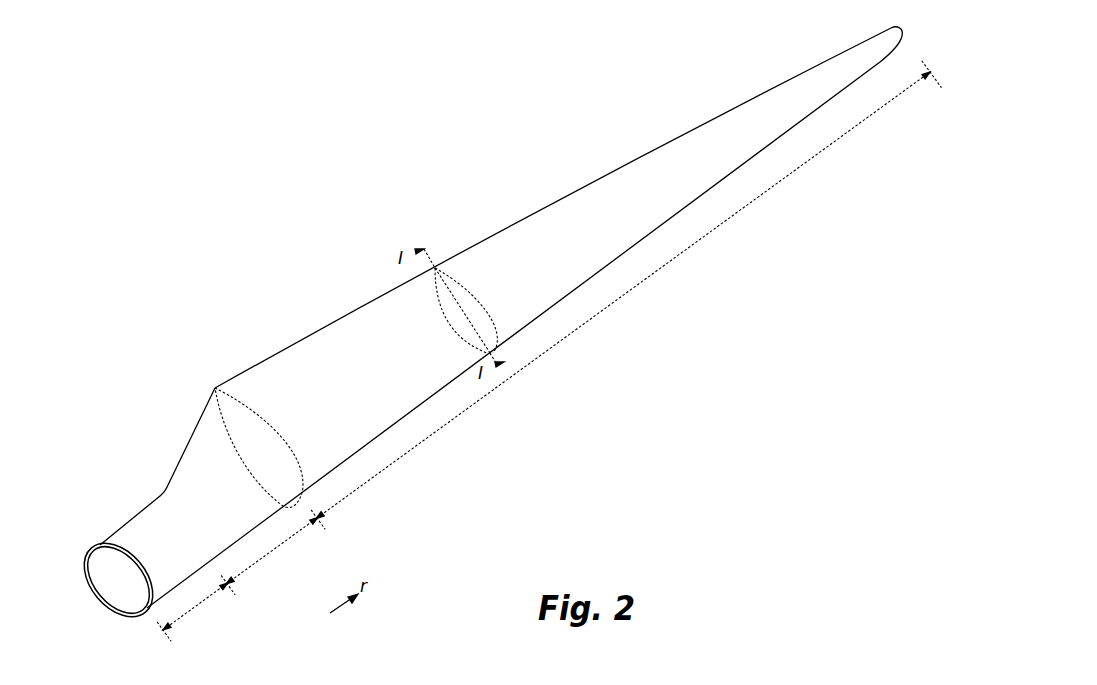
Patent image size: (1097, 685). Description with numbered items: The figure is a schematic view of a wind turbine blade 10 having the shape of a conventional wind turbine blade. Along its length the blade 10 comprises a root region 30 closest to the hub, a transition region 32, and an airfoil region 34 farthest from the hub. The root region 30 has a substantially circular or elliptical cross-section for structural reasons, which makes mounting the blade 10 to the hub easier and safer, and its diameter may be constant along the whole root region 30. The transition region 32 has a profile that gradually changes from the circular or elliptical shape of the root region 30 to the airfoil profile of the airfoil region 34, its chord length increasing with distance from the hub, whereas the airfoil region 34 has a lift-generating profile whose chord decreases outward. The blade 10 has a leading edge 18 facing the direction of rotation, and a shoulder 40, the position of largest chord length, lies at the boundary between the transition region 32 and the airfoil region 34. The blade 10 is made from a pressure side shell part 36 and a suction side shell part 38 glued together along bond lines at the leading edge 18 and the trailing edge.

The wind turbine blade 10 is at (486, 328).
The leading edge 18 is at (652, 235).
The root region 30 is at (203, 605).
The transition region 32 is at (277, 547).
The airfoil region 34 is at (563, 339).
The pressure side shell part 36 is at (118, 540).
The suction side shell part 38 is at (88, 550).
The shoulder 40 is at (215, 388).